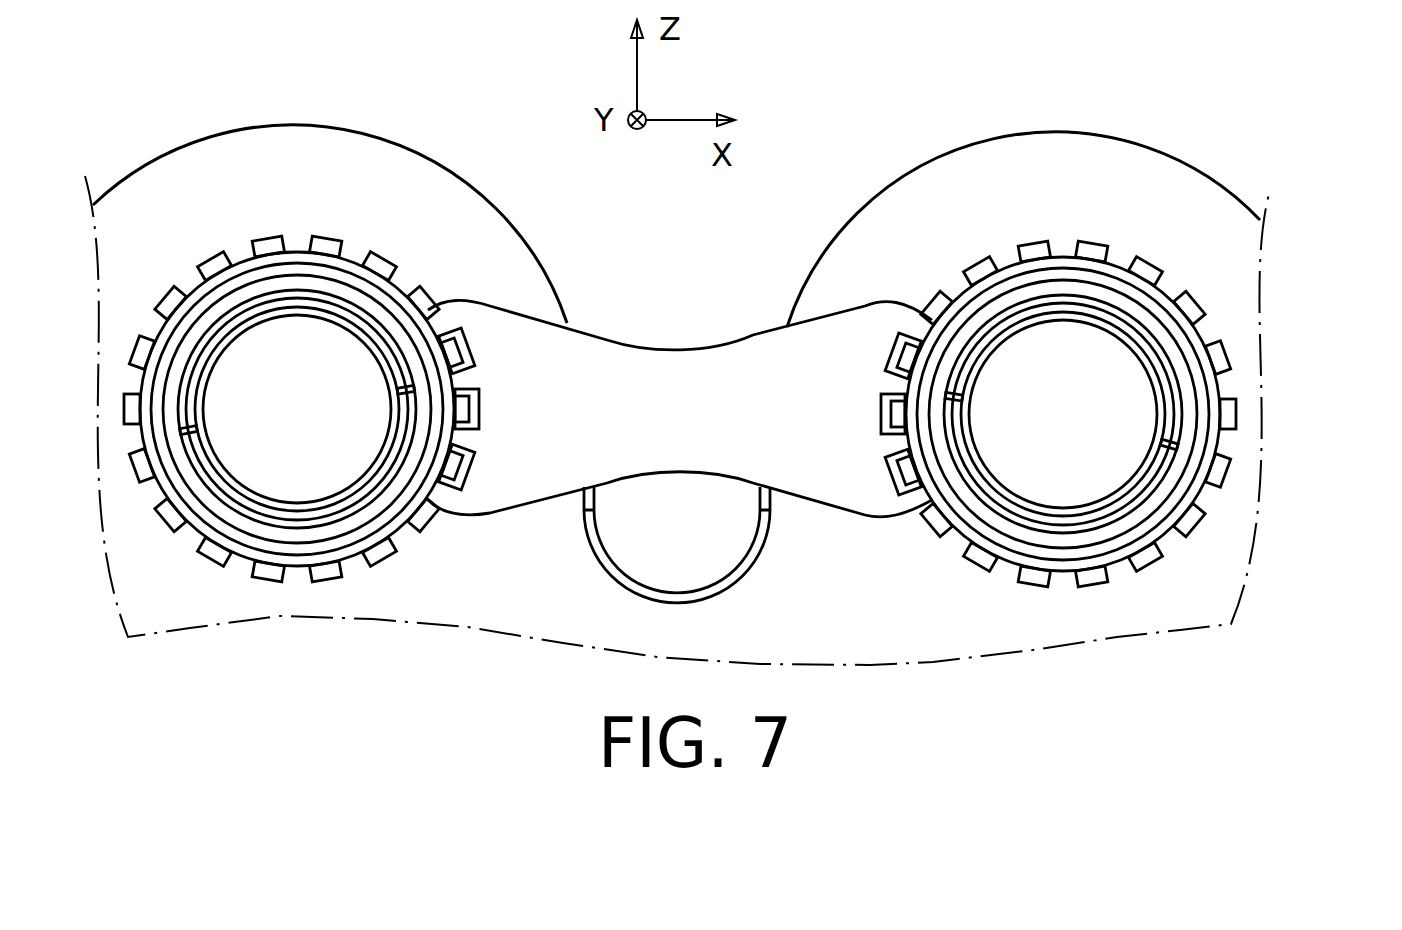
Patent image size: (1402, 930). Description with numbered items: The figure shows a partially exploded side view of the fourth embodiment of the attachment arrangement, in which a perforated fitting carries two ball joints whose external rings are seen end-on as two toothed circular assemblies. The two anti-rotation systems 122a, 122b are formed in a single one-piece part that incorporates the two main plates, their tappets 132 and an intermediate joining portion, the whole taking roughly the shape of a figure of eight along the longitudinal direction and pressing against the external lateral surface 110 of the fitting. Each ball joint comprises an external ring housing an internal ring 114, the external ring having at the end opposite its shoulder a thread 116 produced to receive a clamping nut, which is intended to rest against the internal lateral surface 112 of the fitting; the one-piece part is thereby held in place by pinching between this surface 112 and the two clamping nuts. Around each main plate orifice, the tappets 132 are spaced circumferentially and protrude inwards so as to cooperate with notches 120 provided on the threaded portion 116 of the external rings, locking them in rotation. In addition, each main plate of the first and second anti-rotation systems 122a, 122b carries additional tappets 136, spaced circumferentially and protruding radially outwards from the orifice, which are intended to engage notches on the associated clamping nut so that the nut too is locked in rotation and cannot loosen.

The external lateral surface 110 is at (390, 160).
The internal lateral surface 112 is at (445, 192).
The internal ring 114 is at (415, 300).
The thread 116 is at (347, 270).
The notches 120 is at (270, 268).
The first anti-rotation system 122a is at (278, 214).
The second anti-rotation system 122b is at (1073, 222).
The tappets 132 is at (262, 266).
The additional tappets 136 is at (472, 356).